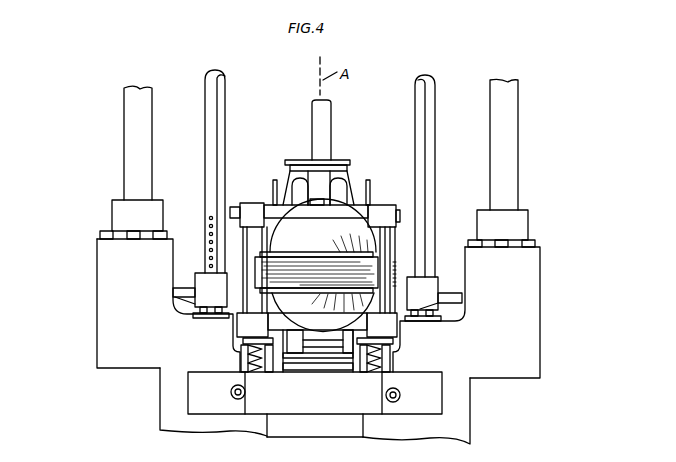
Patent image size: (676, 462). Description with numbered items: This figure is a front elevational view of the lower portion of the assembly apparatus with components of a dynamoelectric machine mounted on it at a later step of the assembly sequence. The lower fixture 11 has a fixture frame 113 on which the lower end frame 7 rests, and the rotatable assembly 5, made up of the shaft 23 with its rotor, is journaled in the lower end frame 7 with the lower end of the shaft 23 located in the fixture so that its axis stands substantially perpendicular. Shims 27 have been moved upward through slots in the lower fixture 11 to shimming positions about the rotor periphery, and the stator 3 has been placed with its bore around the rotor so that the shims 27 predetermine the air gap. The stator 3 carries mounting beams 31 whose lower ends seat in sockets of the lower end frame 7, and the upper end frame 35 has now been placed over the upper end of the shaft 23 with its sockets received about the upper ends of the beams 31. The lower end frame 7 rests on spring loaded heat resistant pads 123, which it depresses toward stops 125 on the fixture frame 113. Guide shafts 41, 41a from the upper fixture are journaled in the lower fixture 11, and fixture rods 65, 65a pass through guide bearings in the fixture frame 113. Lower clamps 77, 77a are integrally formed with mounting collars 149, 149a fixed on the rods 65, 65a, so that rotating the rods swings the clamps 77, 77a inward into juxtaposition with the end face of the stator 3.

The stator 3 is at (302, 268).
The rotatable assembly 5 is at (318, 148).
The lower end frame 7 is at (243, 323).
The lower fixture 11 is at (548, 353).
The shaft 23 is at (312, 115).
The shims 27 is at (370, 200).
The mounting beams 31 is at (230, 232).
The upper end frame 35 is at (250, 210).
The guide shaft 41 is at (133, 145).
The guide shaft 41a is at (517, 155).
The fixture rod 65 is at (210, 80).
The fixture rod 65a is at (431, 97).
The lower clamp 77 is at (172, 291).
The lower clamp 77a is at (460, 298).
The fixture frame 113 is at (125, 358).
The heat resistant pads 123 is at (397, 343).
The stops 125 is at (388, 361).
The mounting collar 149 is at (200, 300).
The mounting collar 149a is at (433, 285).